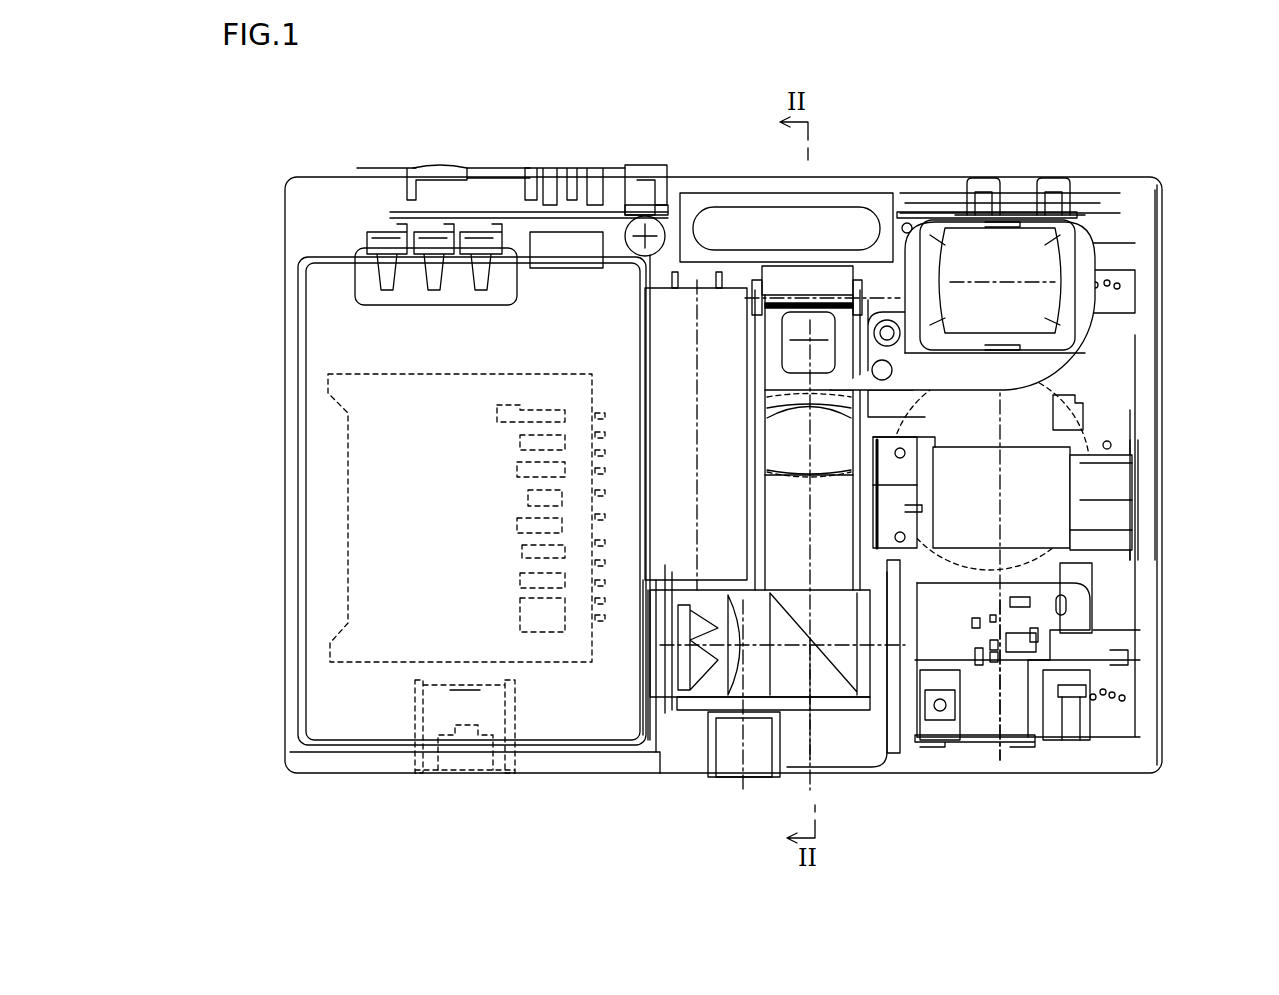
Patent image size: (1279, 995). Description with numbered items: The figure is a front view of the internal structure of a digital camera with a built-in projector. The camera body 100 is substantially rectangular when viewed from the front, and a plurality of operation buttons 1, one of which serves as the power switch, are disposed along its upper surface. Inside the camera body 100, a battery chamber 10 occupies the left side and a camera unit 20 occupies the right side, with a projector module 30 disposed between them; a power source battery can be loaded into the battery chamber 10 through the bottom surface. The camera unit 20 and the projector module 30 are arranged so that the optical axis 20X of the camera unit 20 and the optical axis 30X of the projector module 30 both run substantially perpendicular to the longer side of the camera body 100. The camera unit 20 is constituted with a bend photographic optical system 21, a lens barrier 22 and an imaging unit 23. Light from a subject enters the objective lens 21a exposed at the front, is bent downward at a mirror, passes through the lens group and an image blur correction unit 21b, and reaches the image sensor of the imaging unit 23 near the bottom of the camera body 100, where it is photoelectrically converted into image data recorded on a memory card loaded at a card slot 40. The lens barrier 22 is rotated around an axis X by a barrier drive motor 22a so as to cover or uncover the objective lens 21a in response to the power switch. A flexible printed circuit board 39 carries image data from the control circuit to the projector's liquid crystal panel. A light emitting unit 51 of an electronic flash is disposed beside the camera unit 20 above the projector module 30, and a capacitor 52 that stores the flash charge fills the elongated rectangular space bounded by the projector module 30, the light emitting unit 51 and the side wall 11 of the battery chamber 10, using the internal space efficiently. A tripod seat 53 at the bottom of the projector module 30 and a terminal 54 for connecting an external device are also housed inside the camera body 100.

The camera body 100 is at (293, 168).
The operation buttons 1 is at (612, 167).
The battery chamber 10 is at (358, 733).
The side wall 11 is at (650, 718).
The camera unit 20 is at (1169, 170).
The optical axis 20X is at (1007, 757).
The photographic optical system 21 is at (1150, 408).
The objective lens 21a is at (963, 252).
The image blur correction unit 21b is at (1138, 522).
The lens barrier 22 is at (1090, 263).
The barrier drive motor 22a is at (782, 272).
The imaging unit 23 is at (1023, 730).
The projector module 30 is at (845, 718).
The optical axis 30X is at (813, 720).
The flexible printed circuit board 39 is at (885, 760).
The card slot 40 is at (345, 428).
The light emitting unit 51 is at (853, 222).
The capacitor 52 is at (713, 283).
The tripod seat 53 is at (730, 777).
The terminal 54 is at (512, 722).
The axis X is at (887, 375).